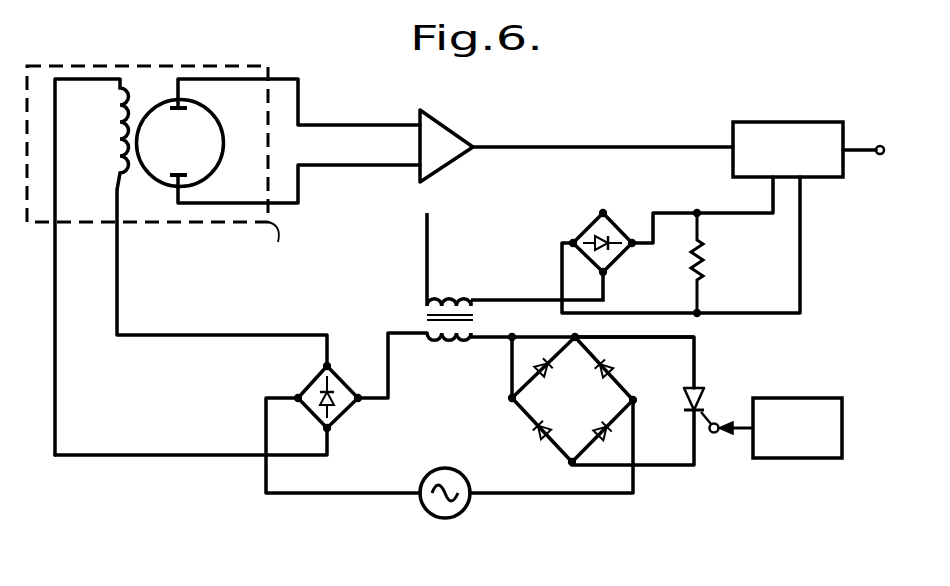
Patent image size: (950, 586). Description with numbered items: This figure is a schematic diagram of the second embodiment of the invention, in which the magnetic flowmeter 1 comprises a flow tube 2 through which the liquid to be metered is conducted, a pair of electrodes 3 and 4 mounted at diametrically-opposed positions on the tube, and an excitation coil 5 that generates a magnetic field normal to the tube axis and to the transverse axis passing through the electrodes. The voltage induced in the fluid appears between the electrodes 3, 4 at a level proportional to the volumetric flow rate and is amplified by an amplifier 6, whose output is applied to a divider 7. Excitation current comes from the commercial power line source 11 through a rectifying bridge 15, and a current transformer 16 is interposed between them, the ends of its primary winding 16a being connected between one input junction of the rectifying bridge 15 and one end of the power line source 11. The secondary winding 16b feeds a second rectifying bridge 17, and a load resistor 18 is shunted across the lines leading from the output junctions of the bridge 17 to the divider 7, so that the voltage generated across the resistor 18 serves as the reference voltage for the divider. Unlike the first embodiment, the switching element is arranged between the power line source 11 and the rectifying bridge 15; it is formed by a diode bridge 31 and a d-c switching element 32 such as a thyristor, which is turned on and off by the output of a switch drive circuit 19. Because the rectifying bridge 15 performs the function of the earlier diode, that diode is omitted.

The magnetic flowmeter 1 is at (264, 66).
The flow tube 2 is at (164, 100).
The electrode 3 is at (176, 111).
The electrode 4 is at (180, 173).
The excitation coil 5 is at (113, 168).
The amplifier 6 is at (455, 128).
The divider 7 is at (795, 124).
The commercial power line source 11 is at (447, 471).
The rectifying bridge 15 is at (345, 417).
The current transformer 16 is at (532, 299).
The primary winding 16a is at (434, 352).
The secondary winding 16b is at (455, 291).
The rectifying bridge 17 is at (616, 268).
The load resistor 18 is at (705, 263).
The switch drive circuit 19 is at (826, 397).
The diode bridge 31 is at (515, 410).
The d-c switching element 32 is at (702, 392).